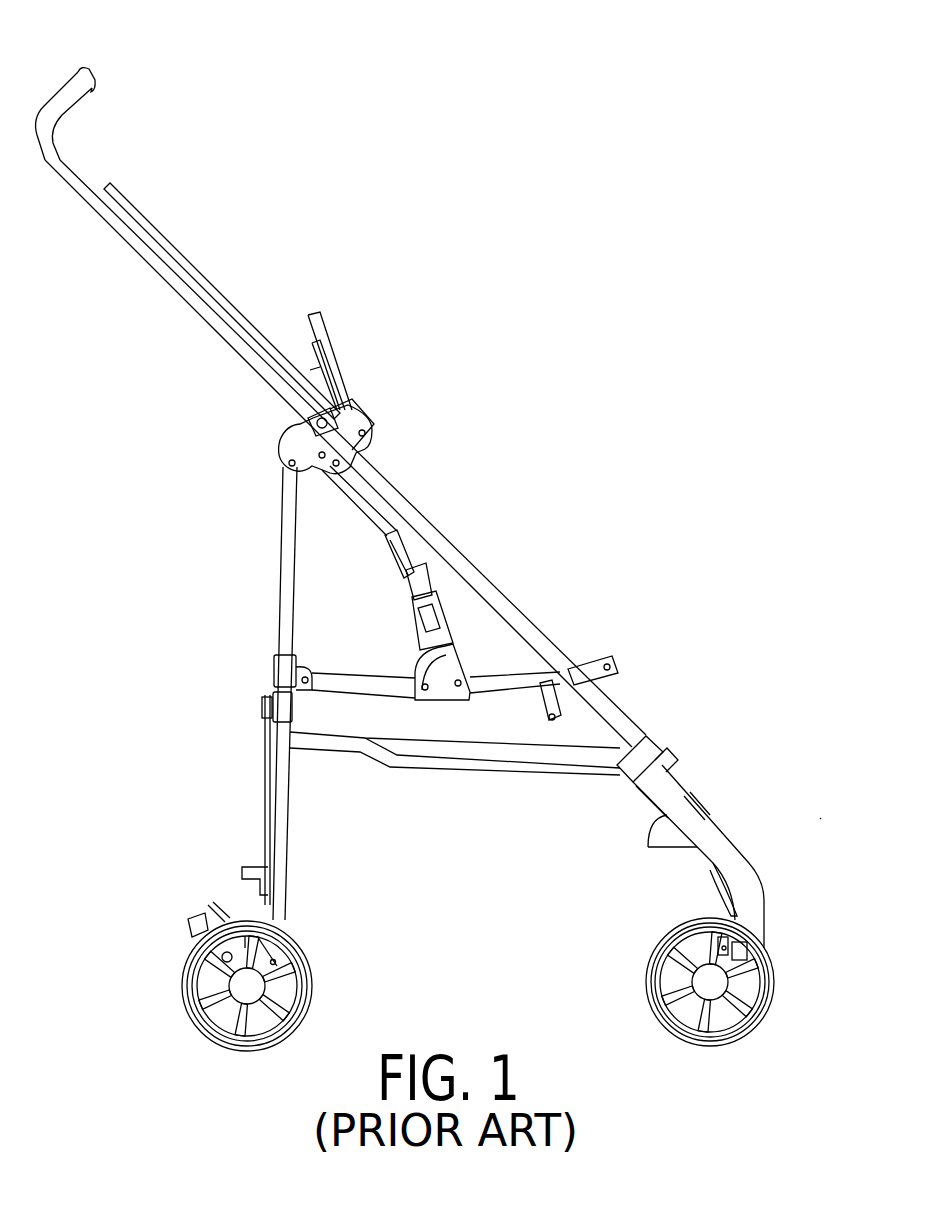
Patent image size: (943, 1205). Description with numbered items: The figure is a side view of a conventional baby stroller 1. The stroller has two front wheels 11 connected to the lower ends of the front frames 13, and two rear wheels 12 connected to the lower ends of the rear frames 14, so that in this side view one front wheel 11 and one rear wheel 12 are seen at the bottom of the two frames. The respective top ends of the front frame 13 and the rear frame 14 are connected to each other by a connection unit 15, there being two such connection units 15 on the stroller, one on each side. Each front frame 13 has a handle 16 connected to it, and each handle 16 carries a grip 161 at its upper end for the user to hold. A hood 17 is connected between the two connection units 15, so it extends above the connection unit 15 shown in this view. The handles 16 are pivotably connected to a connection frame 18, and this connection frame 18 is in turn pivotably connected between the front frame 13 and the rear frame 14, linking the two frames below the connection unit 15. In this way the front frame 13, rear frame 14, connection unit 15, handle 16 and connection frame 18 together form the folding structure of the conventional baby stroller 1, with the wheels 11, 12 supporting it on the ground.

The baby stroller 1 is at (592, 277).
The front wheel 11 is at (747, 1037).
The rear wheel 12 is at (268, 1047).
The front frame 13 is at (600, 735).
The rear frame 14 is at (285, 605).
The connection unit 15 is at (293, 429).
The handle 16 is at (455, 558).
The grip 161 is at (64, 97).
The hood 17 is at (219, 292).
The connection frame 18 is at (417, 763).